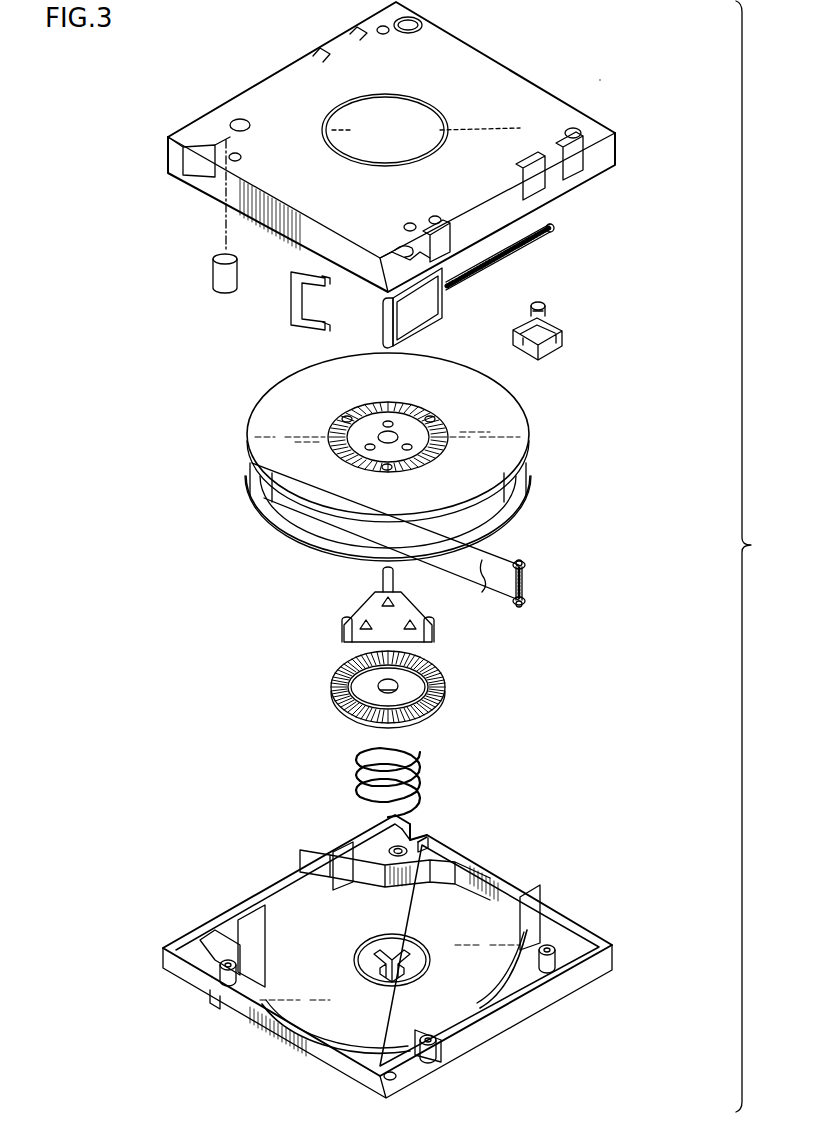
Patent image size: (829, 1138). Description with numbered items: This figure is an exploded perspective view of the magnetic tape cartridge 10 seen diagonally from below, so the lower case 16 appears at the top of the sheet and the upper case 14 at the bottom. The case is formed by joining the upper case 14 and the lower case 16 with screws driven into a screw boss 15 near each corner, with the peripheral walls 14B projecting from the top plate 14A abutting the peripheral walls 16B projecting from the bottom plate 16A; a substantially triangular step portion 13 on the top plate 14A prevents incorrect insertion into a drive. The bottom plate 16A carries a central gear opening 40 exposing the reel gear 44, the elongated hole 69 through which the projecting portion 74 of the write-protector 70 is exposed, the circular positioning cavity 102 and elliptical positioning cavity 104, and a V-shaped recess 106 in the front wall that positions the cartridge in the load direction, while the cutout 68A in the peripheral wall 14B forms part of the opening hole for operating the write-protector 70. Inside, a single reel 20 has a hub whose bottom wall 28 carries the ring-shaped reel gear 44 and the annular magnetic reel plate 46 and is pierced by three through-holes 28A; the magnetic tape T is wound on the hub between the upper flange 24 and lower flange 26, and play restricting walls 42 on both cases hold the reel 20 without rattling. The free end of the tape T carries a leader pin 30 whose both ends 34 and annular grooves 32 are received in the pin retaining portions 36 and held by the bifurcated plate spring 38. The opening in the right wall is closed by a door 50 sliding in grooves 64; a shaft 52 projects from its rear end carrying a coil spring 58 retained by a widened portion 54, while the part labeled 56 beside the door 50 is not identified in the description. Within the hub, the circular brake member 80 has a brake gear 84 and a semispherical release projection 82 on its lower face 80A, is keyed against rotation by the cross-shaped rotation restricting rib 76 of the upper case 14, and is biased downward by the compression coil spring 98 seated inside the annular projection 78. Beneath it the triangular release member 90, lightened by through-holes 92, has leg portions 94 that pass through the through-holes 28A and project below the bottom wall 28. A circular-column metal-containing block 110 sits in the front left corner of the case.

The magnetic tape cartridge 10 is at (598, 70).
The step portion 13 is at (220, 940).
The upper case 14 is at (627, 959).
The top plate 14A is at (488, 882).
The peripheral walls 14B is at (306, 872).
The screw boss 15 is at (395, 848).
The lower case 16 is at (618, 147).
The bottom plate 16A is at (498, 82).
The peripheral walls 16B is at (178, 160).
The reel 20 is at (538, 416).
The upper flange 24 is at (532, 492).
The lower flange 26 is at (497, 404).
The bottom wall 28 is at (400, 430).
The through-holes 28A is at (335, 422).
The leader pin 30 is at (532, 589).
The annular shaped grooves 32 is at (526, 564).
The both ends 34 is at (519, 560).
The pin retaining portions 36 is at (412, 250).
The plate spring 38 is at (290, 302).
The gear opening 40 is at (422, 108).
The play restricting walls 42 is at (253, 918).
The reel gear 44 is at (460, 410).
The reel plate 46 is at (358, 438).
The door 50 is at (374, 318).
The shaft 52 is at (488, 262).
The widened portion 54 is at (552, 231).
The door end portion 56 is at (382, 330).
The coil spring 58 is at (540, 245).
The grooves 64 is at (445, 1070).
The cutout 68A is at (418, 832).
The elongated hole 69 is at (422, 24).
The write-protector 70 is at (573, 350).
The projecting portion 74 is at (545, 305).
The rotation restricting rib 76 is at (396, 950).
The annular shaped projection 78 is at (378, 988).
The brake member 80 is at (458, 699).
The lower face 80A is at (412, 683).
The release projection 82 is at (380, 692).
The brake gear 84 is at (348, 675).
The release member 90 is at (356, 600).
The through-holes 92 is at (408, 620).
The leg portions 94 is at (342, 630).
The compression coil spring 98 is at (422, 752).
The positioning cavity 102 is at (405, 222).
The positioning cavity 104 is at (240, 118).
The recess 106 is at (188, 140).
The metal-containing block 110 is at (202, 268).
The magnetic tape T is at (492, 594).